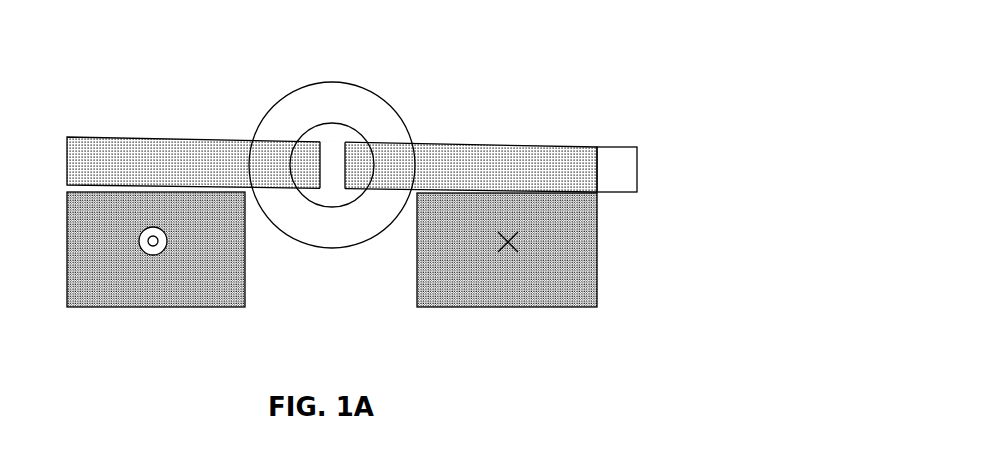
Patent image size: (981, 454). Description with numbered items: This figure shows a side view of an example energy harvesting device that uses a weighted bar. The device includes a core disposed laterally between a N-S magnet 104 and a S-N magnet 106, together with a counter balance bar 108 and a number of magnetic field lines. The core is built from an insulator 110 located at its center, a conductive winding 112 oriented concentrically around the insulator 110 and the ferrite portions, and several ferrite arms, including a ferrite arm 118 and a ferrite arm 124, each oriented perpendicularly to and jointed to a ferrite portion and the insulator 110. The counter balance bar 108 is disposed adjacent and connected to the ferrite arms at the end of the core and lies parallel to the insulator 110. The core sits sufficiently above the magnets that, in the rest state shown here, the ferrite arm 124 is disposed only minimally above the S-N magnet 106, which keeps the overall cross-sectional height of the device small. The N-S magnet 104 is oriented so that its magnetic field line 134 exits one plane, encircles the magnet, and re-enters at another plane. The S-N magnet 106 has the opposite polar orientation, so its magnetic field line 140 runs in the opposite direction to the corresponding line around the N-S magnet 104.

The N-S magnet 104 is at (110, 296).
The S-N magnet 106 is at (467, 296).
The counter balance bar 108 is at (625, 157).
The insulator 110 is at (331, 158).
The conductive winding 112 is at (372, 123).
The ferrite arm 118 is at (112, 174).
The ferrite arm 124 is at (579, 178).
The magnetic field line 134 is at (173, 292).
The magnetic field line 140 is at (535, 283).